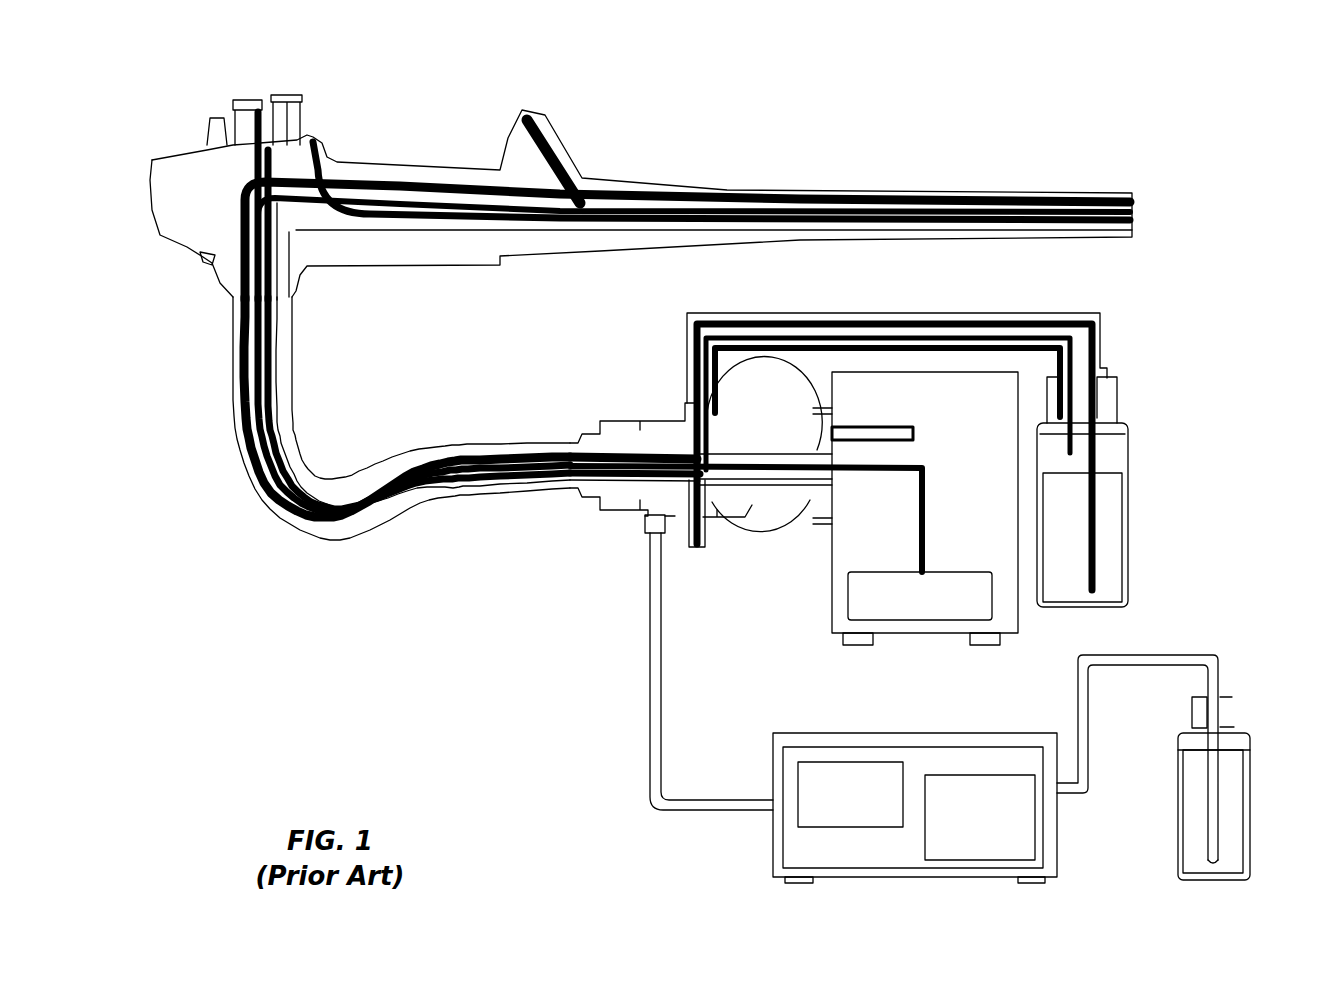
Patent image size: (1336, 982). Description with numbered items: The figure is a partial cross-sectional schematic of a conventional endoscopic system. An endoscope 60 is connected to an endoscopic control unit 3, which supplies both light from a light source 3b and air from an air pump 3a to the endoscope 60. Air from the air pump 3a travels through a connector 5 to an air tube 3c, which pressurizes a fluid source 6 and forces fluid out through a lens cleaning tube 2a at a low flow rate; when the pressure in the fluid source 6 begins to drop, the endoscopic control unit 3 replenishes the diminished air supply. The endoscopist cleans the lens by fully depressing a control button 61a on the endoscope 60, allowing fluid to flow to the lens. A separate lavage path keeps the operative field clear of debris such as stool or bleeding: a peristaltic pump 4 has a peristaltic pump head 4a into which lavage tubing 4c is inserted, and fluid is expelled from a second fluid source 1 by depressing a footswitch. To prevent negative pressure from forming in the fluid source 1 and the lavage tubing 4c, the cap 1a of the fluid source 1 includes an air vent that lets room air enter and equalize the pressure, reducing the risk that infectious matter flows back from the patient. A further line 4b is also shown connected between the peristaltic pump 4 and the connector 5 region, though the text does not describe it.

The fluid source 1 is at (1264, 763).
The cap 1a is at (1190, 714).
The lens cleaning tube 2a is at (830, 318).
The endoscopic control unit 3 is at (800, 590).
The air pump 3a is at (968, 571).
The light source 3b is at (903, 425).
The air tube 3c is at (905, 337).
The peristaltic pump 4 is at (870, 725).
The peristaltic pump head 4a is at (978, 775).
The signal cable 4b is at (648, 655).
The lavage tubing 4c is at (1158, 653).
The connector 5 is at (684, 402).
The fluid source 6 is at (1142, 435).
The endoscope 60 is at (262, 495).
The control button 61a is at (272, 98).